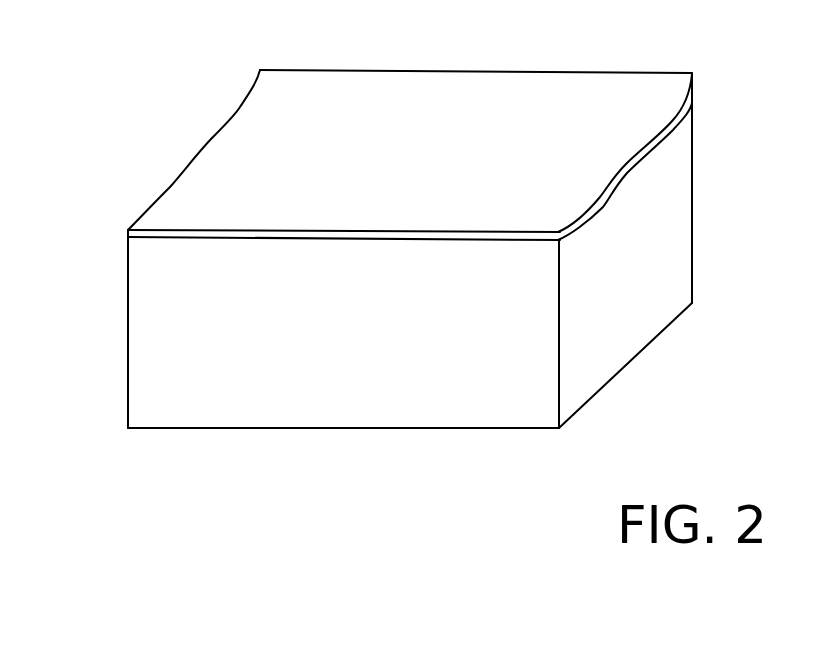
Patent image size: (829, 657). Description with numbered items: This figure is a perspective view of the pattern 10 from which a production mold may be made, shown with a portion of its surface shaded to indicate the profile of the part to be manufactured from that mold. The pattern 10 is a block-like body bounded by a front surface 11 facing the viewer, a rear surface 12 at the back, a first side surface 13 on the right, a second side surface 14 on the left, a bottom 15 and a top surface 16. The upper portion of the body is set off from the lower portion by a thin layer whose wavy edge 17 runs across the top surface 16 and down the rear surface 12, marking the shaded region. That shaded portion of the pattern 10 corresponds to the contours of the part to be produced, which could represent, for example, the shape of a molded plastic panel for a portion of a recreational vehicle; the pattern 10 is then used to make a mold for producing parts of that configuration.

The pattern 10 is at (350, 463).
The front surface 11 is at (520, 403).
The rear surface 12 is at (692, 178).
The first side surface 13 is at (652, 287).
The second side surface 14 is at (128, 290).
The bottom 15 is at (197, 428).
The top surface 16 is at (417, 93).
The top layer wavy edge 17 is at (203, 185).